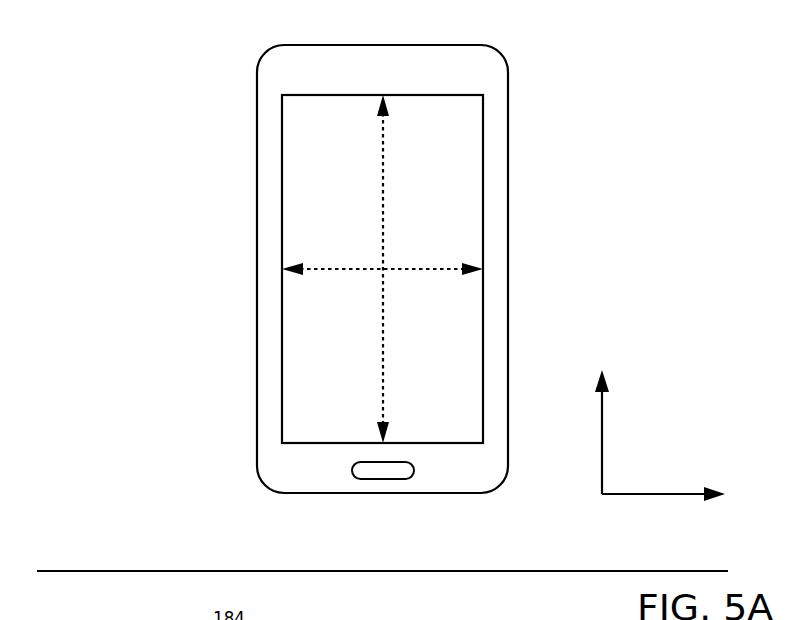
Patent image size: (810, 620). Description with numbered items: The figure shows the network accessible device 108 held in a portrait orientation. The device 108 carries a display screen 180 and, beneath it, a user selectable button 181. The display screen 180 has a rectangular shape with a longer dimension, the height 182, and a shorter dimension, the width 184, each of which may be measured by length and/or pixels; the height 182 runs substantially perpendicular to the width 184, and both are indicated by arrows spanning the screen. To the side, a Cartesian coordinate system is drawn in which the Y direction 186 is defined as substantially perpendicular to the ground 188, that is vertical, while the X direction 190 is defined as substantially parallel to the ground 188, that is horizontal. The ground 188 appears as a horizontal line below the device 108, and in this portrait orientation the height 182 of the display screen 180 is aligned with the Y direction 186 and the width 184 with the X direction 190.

The network accessible device 108 is at (228, 107).
The display screen 180 is at (445, 168).
The user selectable button 181 is at (383, 479).
The longer dimension (height) 182 is at (383, 168).
The shorter dimension (width) 184 is at (353, 270).
The Y direction 186 is at (602, 430).
The ground 188 is at (98, 570).
The X direction 190 is at (663, 494).